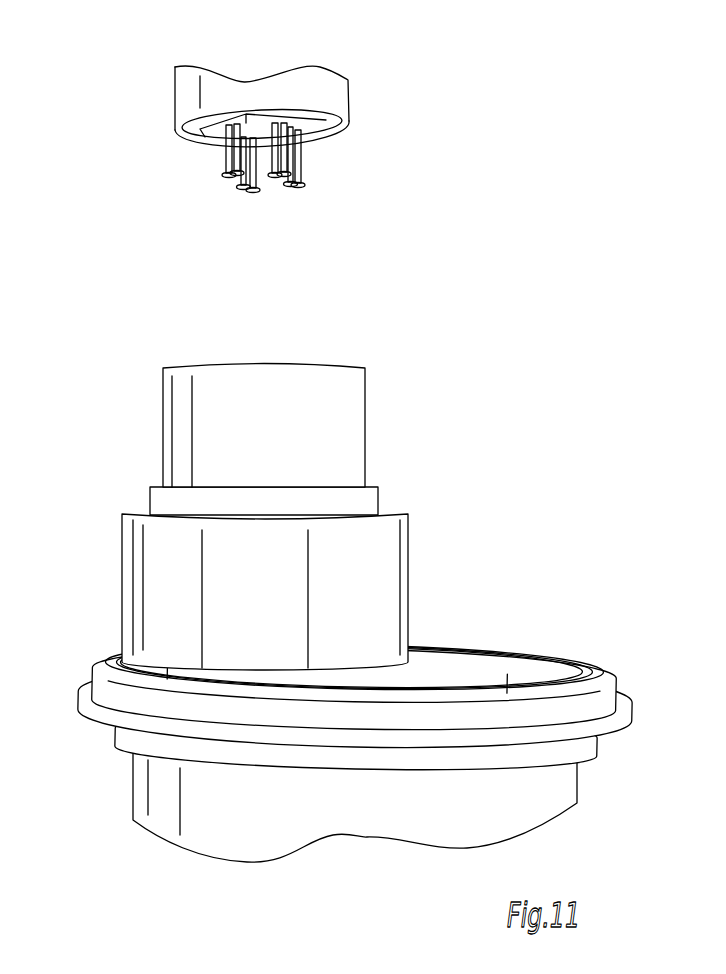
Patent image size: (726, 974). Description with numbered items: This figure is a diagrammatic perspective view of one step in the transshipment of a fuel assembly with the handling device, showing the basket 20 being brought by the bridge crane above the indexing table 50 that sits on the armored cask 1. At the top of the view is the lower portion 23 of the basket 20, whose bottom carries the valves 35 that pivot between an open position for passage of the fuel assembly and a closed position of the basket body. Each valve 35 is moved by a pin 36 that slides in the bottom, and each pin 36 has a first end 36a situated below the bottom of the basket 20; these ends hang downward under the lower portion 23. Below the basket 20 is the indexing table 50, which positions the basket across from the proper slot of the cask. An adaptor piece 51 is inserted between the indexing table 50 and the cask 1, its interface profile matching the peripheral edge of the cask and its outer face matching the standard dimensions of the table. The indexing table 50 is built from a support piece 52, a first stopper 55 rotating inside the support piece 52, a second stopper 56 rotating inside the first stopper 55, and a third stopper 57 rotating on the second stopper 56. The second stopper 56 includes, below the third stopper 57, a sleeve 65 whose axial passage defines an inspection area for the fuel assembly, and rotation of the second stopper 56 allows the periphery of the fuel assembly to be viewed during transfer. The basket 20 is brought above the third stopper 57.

The armored cask 1 is at (552, 780).
The basket 20 is at (279, 116).
The lower portion 23 is at (341, 115).
The valves 35 is at (256, 127).
The pin 36 is at (227, 157).
The first end 36a is at (253, 192).
The indexing table 50 is at (352, 613).
The adaptor piece 51 is at (598, 741).
The support piece 52 is at (78, 702).
The first stopper 55 is at (336, 661).
The second stopper 56 is at (425, 672).
The third stopper 57 is at (350, 430).
The sleeve 65 is at (370, 550).